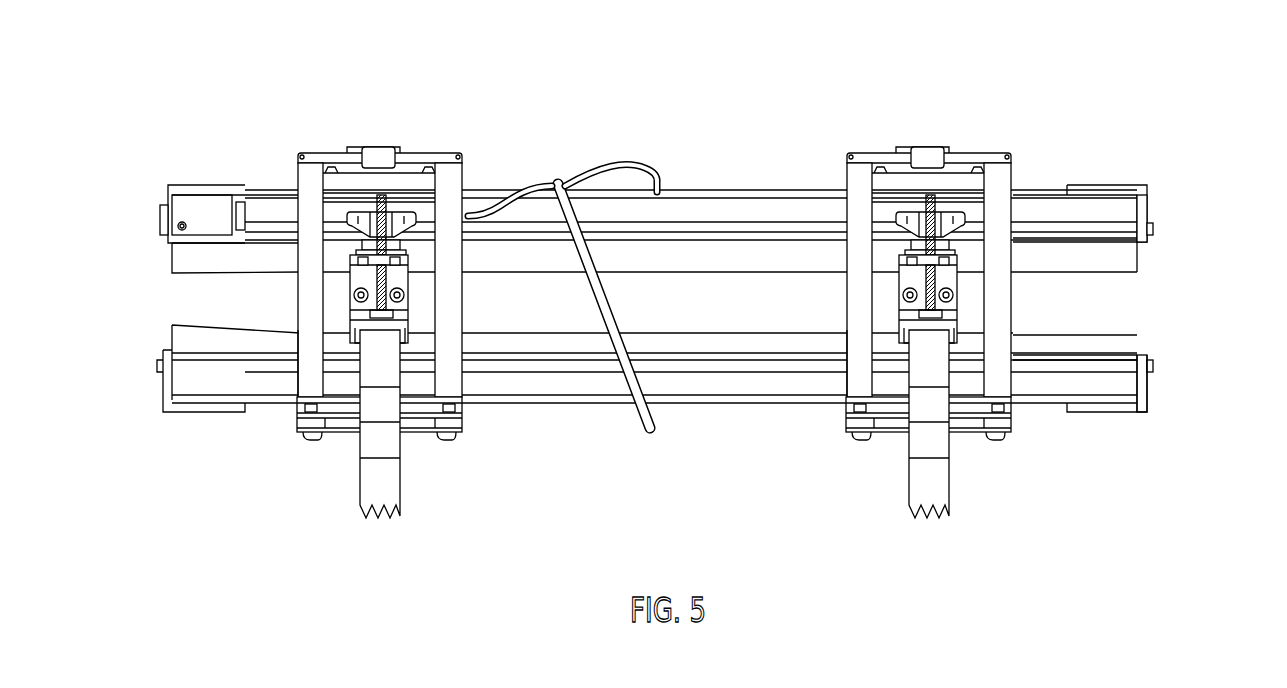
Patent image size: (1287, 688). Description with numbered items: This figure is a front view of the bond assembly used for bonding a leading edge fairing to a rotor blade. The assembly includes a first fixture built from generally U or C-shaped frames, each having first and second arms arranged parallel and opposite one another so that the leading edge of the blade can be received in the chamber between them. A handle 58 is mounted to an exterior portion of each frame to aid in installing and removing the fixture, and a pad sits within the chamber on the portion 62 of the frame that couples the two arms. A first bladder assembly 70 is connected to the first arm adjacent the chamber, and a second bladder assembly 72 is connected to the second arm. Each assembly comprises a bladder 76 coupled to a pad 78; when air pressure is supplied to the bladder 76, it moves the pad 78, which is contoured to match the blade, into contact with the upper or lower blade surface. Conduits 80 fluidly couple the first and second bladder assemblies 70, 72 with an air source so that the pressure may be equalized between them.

The handle 58 is at (311, 338).
The portion of the frame 62 is at (858, 305).
The first bladder assembly 70 is at (1192, 232).
The second bladder assembly 72 is at (1196, 366).
The bladder 76 is at (1117, 212).
The pad 78 is at (1133, 258).
The conduit 80 is at (620, 370).